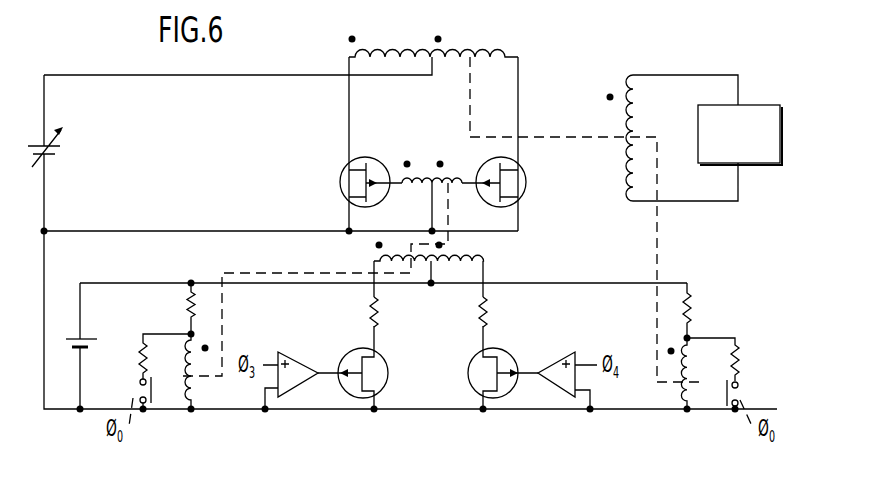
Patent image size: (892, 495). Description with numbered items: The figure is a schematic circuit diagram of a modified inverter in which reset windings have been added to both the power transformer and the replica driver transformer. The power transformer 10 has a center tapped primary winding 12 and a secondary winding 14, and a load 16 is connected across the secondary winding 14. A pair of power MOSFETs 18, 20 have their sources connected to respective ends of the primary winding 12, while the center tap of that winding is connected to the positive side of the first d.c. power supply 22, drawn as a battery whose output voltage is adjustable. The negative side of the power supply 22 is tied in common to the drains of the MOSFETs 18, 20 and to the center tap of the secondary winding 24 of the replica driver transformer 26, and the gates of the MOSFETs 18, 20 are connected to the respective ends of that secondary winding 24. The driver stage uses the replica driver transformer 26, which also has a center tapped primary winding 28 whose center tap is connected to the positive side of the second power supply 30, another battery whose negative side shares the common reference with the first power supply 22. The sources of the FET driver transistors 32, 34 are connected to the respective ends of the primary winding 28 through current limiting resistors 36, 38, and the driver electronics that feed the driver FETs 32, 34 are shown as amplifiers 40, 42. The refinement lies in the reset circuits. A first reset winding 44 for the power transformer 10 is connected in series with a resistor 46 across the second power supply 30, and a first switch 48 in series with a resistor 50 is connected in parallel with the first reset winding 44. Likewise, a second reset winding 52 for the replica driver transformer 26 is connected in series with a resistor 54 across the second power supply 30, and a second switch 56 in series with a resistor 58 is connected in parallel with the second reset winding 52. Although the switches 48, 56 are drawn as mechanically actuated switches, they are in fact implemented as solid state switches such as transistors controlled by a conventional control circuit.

The power transformer 10 is at (503, 36).
The center tapped primary winding 12 is at (454, 52).
The secondary winding 14 is at (622, 169).
The load 16 is at (752, 105).
The power MOSFET 18 is at (339, 178).
The power MOSFET 20 is at (523, 180).
The first d.c. power supply 22 is at (62, 152).
The secondary winding 24 is at (418, 178).
The replica driver transformer 26 is at (475, 252).
The center tapped primary winding 28 is at (382, 255).
The second power supply 30 is at (109, 332).
The FET driver transistor 32 is at (388, 367).
The FET driver transistor 34 is at (477, 367).
The current limiting resistor 36 is at (382, 320).
The current limiting resistor 38 is at (477, 320).
The amplifier 40 is at (308, 348).
The amplifier 42 is at (562, 360).
The first reset winding 44 is at (680, 391).
The resistor 46 is at (692, 311).
The first switch 48 is at (752, 400).
The resistor 50 is at (741, 360).
The second reset winding 52 is at (196, 390).
The resistor 54 is at (187, 304).
The second switch 56 is at (134, 392).
The resistor 58 is at (140, 362).